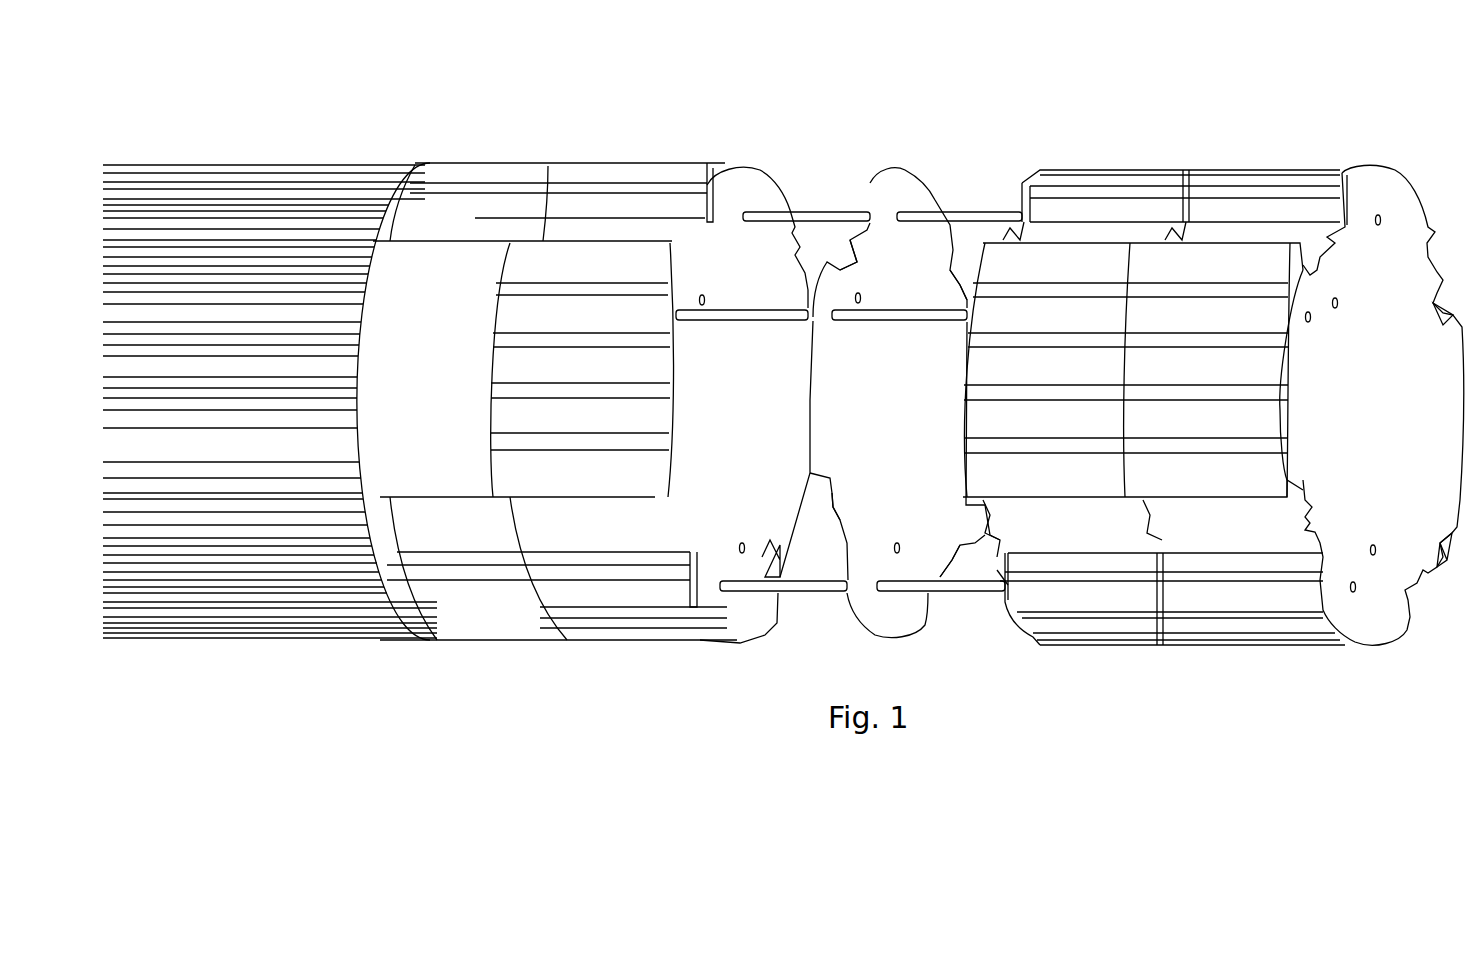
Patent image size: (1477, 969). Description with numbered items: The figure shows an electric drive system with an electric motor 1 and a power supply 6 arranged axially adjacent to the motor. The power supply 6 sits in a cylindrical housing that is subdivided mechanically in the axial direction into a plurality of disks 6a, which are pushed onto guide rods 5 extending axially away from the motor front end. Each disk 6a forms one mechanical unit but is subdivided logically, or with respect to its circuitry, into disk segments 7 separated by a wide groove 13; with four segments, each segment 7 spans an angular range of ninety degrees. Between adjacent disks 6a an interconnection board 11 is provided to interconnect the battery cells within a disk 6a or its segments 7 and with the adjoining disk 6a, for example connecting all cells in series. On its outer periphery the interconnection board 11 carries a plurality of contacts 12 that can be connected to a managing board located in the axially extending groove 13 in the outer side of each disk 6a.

The electric motor 1 is at (305, 80).
The guide rods 5 is at (977, 213).
The power supply 6 is at (1126, 138).
The disks 6a is at (897, 370).
The disk segments 7 is at (1420, 277).
The interconnection board 11 is at (760, 460).
The contacts 12 is at (862, 245).
The groove 13 is at (1164, 407).